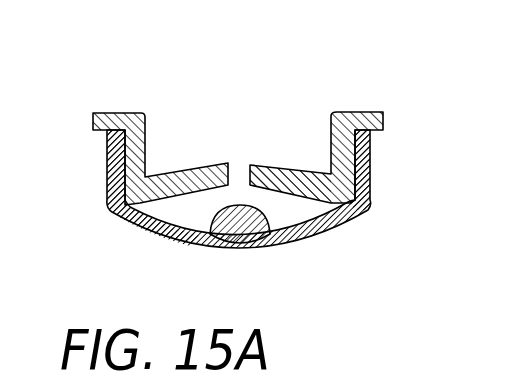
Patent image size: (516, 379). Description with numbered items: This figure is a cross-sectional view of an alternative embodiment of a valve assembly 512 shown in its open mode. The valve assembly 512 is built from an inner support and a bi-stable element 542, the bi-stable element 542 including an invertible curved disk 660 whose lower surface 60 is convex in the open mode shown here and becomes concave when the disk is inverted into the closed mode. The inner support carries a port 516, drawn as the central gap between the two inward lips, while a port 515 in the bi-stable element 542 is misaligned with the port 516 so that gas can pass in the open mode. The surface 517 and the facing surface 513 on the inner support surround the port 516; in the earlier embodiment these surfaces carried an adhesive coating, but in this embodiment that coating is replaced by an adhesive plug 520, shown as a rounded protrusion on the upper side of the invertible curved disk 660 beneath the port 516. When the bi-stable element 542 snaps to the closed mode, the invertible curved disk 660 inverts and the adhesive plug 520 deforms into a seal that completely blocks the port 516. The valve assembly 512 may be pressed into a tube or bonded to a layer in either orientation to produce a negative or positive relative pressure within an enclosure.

The valve assembly 512 is at (352, 83).
The facing surface 513 is at (181, 196).
The port 515 is at (160, 228).
The port 516 is at (240, 150).
The surface 517 is at (295, 223).
The adhesive plug 520 is at (252, 247).
The bi-stable element 542 is at (375, 181).
The lower surface 60 is at (318, 228).
The invertible curved disk 660 is at (216, 250).